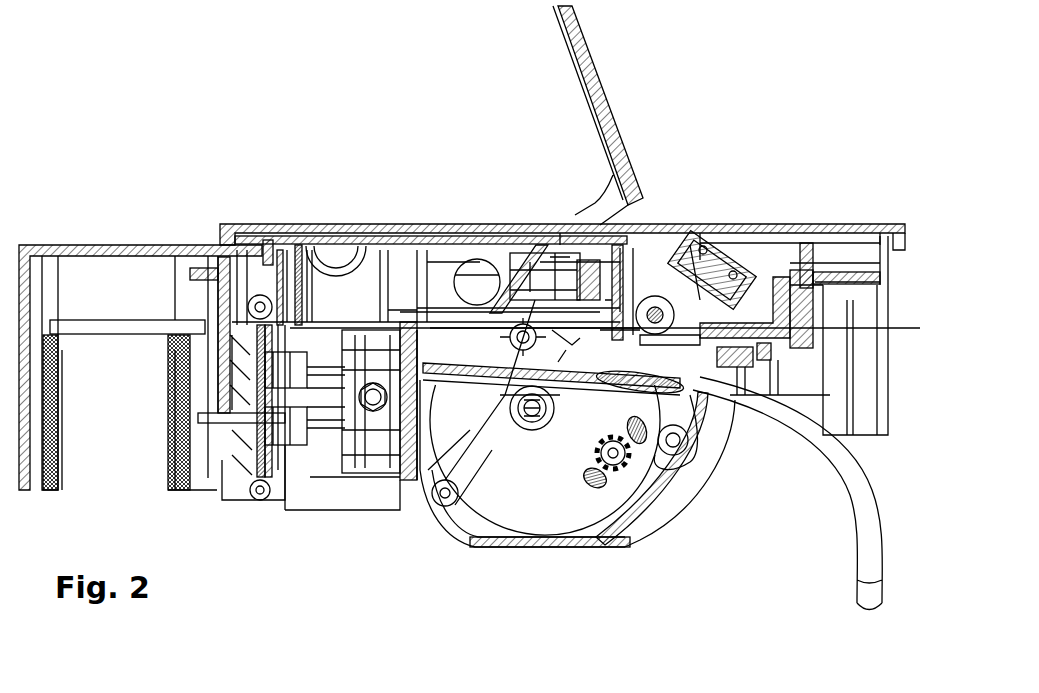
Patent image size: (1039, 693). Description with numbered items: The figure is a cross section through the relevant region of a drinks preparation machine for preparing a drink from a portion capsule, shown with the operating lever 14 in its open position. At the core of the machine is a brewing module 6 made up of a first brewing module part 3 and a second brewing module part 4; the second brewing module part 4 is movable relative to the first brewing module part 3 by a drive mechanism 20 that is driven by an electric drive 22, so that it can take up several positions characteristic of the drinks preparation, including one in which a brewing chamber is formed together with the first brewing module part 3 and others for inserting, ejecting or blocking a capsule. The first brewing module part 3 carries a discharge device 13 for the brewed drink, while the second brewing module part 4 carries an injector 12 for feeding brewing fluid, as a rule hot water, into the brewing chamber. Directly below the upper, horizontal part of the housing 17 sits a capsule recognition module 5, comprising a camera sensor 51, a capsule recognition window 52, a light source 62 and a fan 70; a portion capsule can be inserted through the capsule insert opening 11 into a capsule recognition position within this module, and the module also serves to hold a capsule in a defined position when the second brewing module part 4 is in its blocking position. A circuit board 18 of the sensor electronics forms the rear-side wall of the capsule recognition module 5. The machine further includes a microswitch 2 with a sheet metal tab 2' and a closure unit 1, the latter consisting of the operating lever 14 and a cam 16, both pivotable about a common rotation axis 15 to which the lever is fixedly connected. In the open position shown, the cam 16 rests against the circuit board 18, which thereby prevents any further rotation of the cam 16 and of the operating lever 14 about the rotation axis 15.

The closure unit 1 is at (695, 132).
The microswitch 2 is at (737, 239).
The sheet metal tab 2' is at (760, 282).
The first brewing module part 3 is at (275, 440).
The second brewing module part 4 is at (392, 425).
The capsule recognition module 5 is at (373, 187).
The brewing module 6 is at (303, 593).
The capsule insert opening 11 is at (333, 245).
The injector 12 is at (432, 385).
The discharge device 13 is at (233, 425).
The operating lever 14 is at (590, 62).
The rotation axis 15 is at (622, 300).
The cam 16 is at (660, 275).
The housing 17 is at (447, 223).
The circuit board 18 is at (617, 270).
The drive mechanism 20 is at (687, 538).
The electric drive 22 is at (614, 440).
The camera sensor 51 is at (640, 330).
The capsule recognition window 52 is at (497, 308).
The light source 62 is at (603, 320).
The fan 70 is at (470, 290).